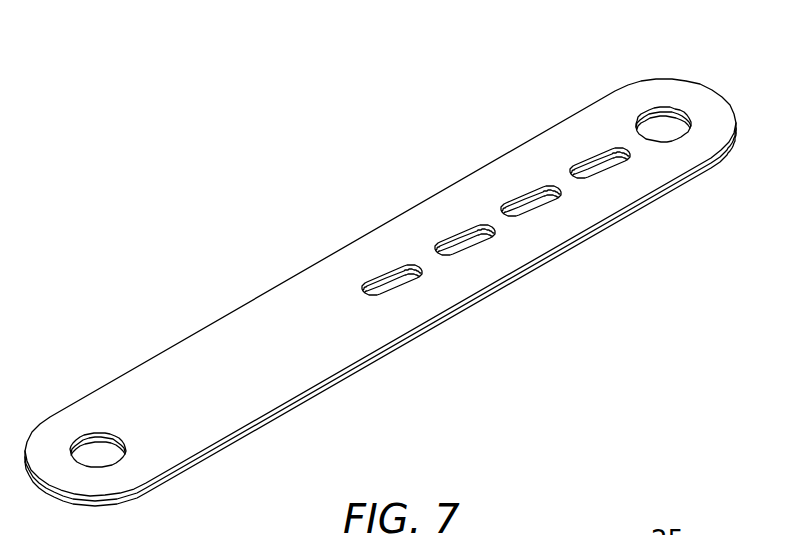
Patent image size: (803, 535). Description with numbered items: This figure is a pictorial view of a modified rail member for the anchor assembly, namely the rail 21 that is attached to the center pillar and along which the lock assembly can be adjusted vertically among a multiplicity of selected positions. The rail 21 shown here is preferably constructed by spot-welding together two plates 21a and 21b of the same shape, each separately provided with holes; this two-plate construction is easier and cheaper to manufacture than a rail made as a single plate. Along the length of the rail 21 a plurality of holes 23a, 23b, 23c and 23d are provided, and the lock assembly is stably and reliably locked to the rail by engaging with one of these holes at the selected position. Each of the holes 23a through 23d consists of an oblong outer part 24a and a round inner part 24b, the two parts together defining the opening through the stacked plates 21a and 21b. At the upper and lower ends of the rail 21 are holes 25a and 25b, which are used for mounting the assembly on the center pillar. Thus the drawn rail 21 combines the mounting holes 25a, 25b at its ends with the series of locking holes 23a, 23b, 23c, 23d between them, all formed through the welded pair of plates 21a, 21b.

The rail 21 is at (380, 292).
The plate 21a is at (418, 333).
The plate 21b is at (407, 343).
The hole 23a is at (595, 158).
The hole 23b is at (606, 251).
The hole 23c is at (462, 228).
The hole 23d is at (390, 272).
The oblong outer part 24a is at (543, 202).
The round inner part 24b is at (530, 213).
The hole 25a is at (660, 124).
The hole 25b is at (115, 450).